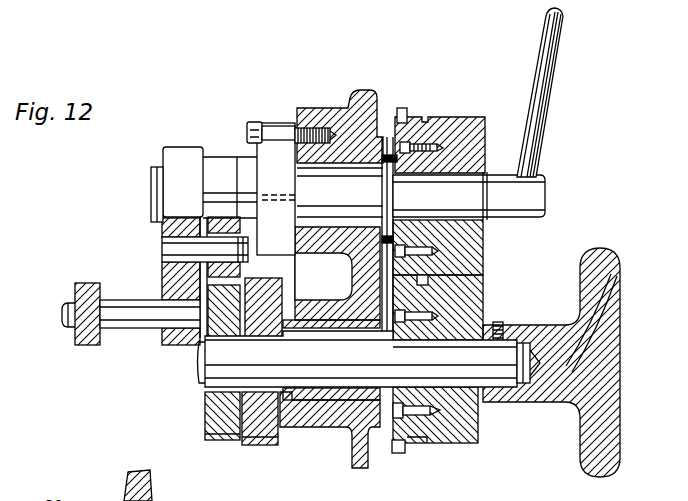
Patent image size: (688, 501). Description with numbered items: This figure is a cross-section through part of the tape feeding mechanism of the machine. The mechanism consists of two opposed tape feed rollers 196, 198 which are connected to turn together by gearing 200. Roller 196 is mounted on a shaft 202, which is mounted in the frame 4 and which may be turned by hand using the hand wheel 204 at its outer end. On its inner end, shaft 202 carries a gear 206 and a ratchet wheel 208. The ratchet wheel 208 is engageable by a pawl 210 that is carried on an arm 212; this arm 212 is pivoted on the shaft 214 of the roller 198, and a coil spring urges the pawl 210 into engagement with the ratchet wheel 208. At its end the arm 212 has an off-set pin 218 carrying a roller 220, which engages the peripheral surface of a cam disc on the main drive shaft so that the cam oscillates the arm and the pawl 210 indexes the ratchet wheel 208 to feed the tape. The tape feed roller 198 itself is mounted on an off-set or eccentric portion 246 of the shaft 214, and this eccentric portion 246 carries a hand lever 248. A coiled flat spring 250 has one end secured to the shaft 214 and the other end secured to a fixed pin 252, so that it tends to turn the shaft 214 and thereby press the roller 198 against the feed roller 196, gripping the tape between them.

The frame 4 is at (360, 463).
The roller 196 is at (470, 303).
The roller 198 is at (475, 253).
The gearing 200 is at (408, 112).
The shaft 202 is at (460, 363).
The hand wheel 204 is at (592, 423).
The gear 206 is at (280, 437).
The ratchet wheel 208 is at (212, 410).
The pawl 210 is at (218, 216).
The arm 212 is at (160, 273).
The shaft 214 is at (330, 187).
The off-set pin 218 is at (135, 323).
The roller 220 is at (83, 283).
The eccentric portion 246 is at (486, 163).
The hand lever 248 is at (549, 90).
The coiled flat spring 250 is at (275, 157).
The fixed pin 252 is at (263, 123).